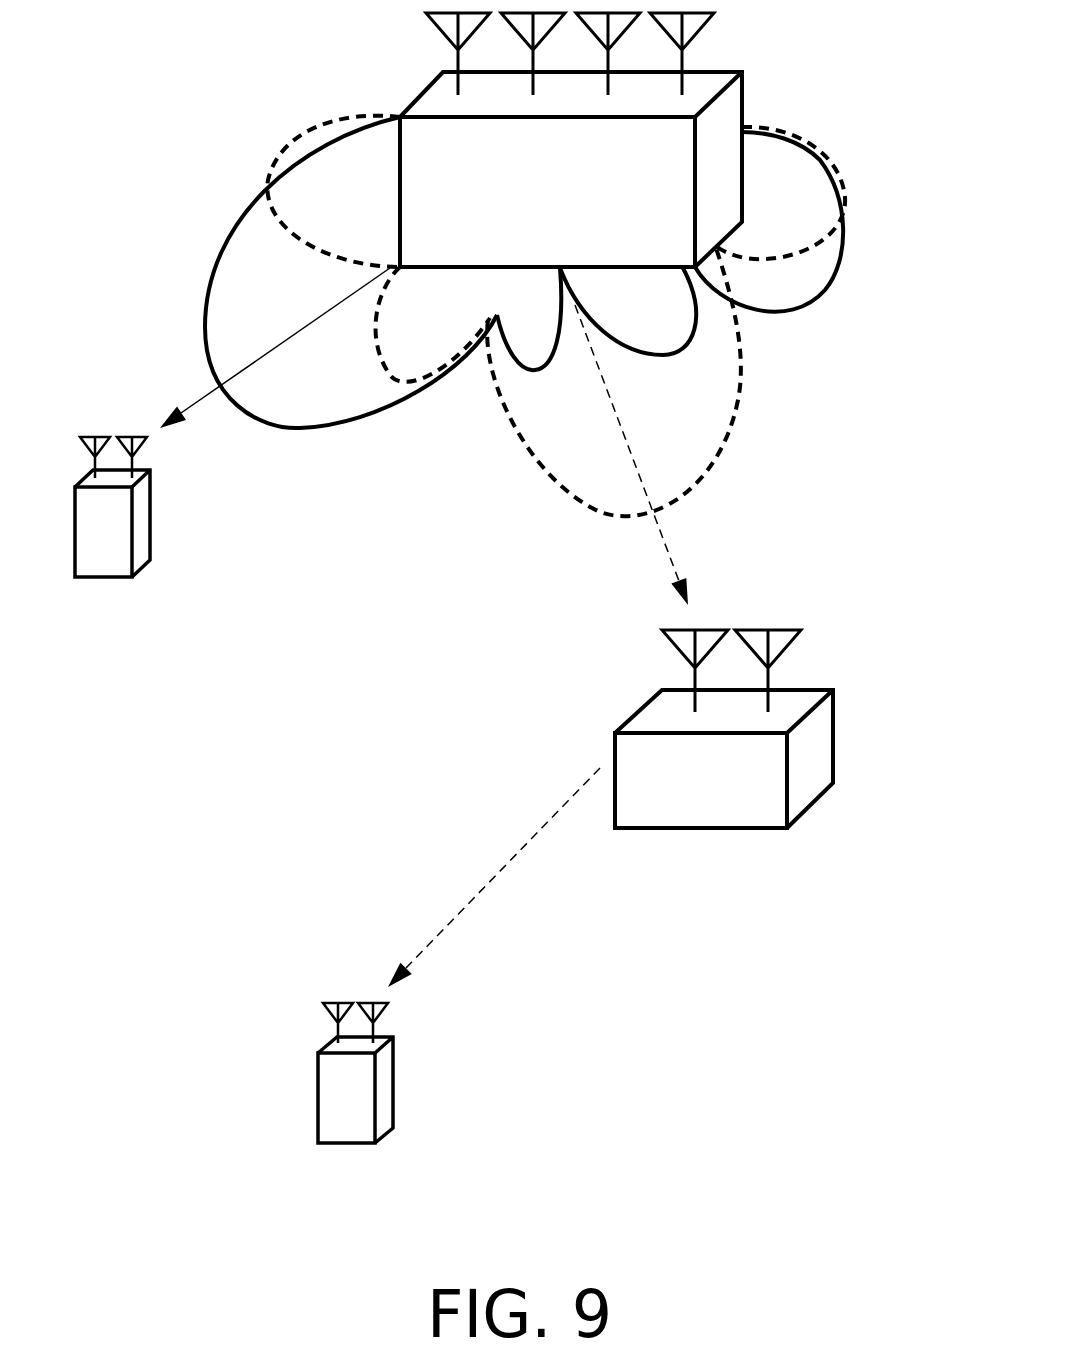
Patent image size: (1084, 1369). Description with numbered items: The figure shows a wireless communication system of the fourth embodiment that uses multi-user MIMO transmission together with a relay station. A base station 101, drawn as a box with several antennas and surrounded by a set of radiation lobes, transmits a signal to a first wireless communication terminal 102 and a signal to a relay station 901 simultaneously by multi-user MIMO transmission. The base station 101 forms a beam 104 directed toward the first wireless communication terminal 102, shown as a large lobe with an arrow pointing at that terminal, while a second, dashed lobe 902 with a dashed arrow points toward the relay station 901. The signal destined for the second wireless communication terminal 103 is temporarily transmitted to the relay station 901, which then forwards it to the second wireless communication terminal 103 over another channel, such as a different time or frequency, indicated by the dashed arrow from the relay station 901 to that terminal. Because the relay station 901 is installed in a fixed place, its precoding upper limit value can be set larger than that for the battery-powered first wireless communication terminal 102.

The base station 101 is at (720, 63).
The wireless communication terminal 1 102 is at (152, 507).
The wireless communication terminal 2 103 is at (397, 1073).
The beam directed to terminal 1 104 is at (243, 220).
The relay station 901 is at (833, 738).
The directional beam toward relay station 902 is at (737, 397).